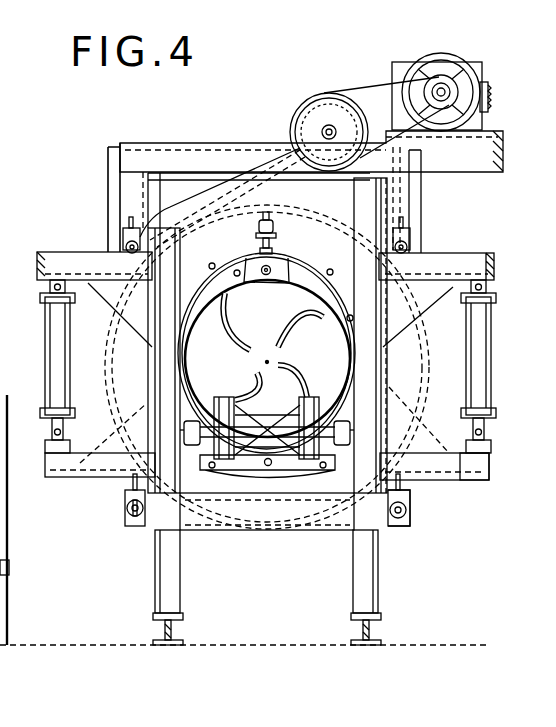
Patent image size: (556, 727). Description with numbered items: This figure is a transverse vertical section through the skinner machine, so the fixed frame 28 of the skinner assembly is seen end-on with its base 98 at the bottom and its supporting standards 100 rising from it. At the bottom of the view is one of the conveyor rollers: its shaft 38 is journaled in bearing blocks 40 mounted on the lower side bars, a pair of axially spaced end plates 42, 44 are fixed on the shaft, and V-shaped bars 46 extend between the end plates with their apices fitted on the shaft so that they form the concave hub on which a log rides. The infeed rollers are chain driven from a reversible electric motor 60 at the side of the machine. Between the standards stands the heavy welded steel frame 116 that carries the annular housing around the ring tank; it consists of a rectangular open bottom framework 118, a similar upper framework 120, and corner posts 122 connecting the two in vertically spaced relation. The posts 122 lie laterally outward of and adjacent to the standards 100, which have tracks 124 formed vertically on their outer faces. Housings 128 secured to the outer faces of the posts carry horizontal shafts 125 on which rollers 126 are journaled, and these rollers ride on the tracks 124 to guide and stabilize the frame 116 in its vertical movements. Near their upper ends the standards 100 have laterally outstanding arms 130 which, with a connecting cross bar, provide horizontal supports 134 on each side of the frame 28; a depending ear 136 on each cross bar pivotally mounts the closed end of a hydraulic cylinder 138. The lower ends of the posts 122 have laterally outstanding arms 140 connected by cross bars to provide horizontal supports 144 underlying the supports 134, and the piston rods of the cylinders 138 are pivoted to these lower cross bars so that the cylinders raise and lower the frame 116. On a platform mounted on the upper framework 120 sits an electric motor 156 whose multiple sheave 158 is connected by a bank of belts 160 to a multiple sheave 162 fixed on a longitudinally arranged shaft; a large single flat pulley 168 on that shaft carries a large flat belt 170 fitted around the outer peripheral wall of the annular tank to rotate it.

The frame 28 is at (387, 633).
The shaft 38 is at (336, 457).
The bearing block 40 is at (200, 422).
The end plate 42 is at (215, 452).
The end plate 44 is at (312, 455).
The V-shaped bar 46 is at (240, 458).
The reversible electric motor 60 is at (7, 572).
The base 98 is at (175, 635).
The supporting standard 100 is at (182, 596).
The frame 116 is at (422, 524).
The bottom framework 118 is at (312, 520).
The upper framework 120 is at (278, 180).
The corner post 122 is at (105, 196).
The track 124 is at (150, 530).
The shaft 125 is at (128, 518).
The roller 126 is at (125, 512).
The housing 128 is at (140, 228).
The arm 130 is at (62, 260).
The horizontal support 134 is at (494, 262).
The depending ear 136 is at (494, 292).
The hydraulic cylinder 138 is at (482, 365).
The arm 140 is at (470, 474).
The horizontal support 144 is at (492, 462).
The electric motor 156 is at (445, 58).
The multiple sheave 158 is at (438, 88).
The bank of belts 160 is at (362, 92).
The multiple sheave 162 is at (318, 100).
The flat pulley 168 is at (300, 108).
The flat belt 170 is at (287, 140).